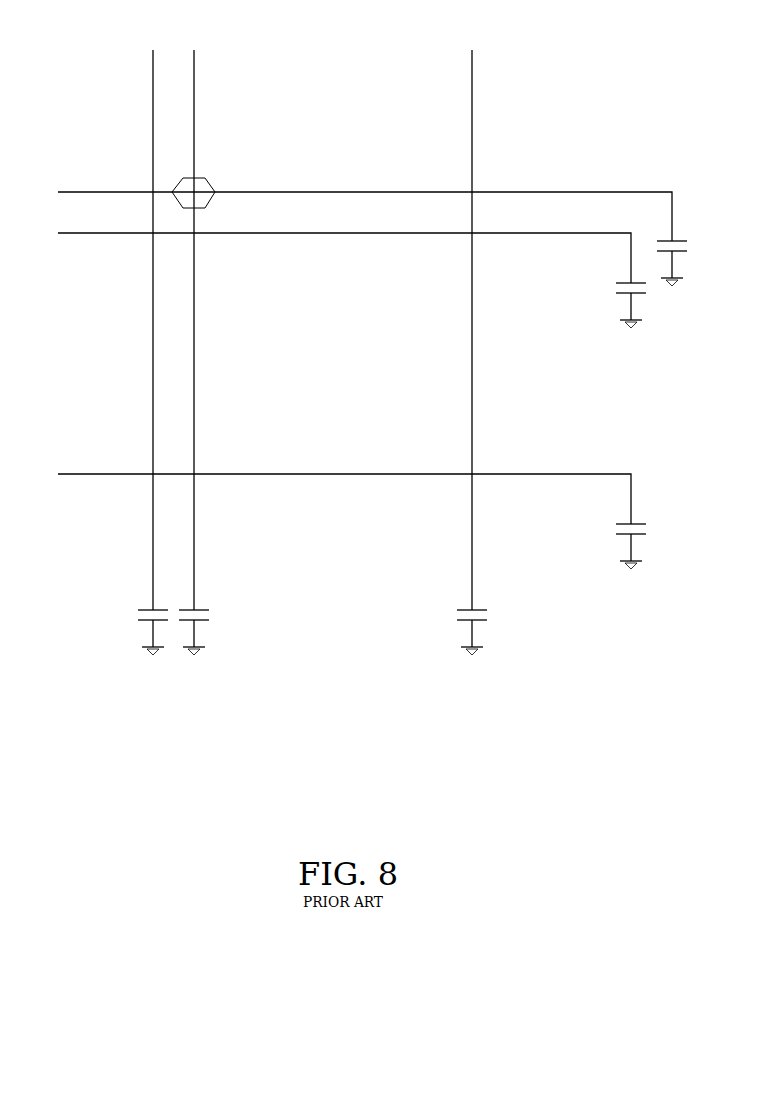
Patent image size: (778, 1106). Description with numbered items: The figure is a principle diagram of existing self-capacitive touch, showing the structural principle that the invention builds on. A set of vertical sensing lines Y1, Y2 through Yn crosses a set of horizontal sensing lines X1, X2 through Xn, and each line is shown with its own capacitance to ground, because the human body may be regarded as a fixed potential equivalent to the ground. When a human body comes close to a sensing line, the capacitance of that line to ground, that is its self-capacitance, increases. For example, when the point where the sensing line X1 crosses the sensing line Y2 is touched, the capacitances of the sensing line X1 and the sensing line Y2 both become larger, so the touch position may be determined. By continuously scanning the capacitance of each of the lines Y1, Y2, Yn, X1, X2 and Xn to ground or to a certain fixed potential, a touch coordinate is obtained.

The sensing line Y1 is at (153, 335).
The sensing line Y2 is at (193, 335).
The sensing line Yn is at (472, 335).
The sensing line X1 is at (359, 232).
The sensing line X2 is at (338, 273).
The sensing line Xn is at (338, 514).